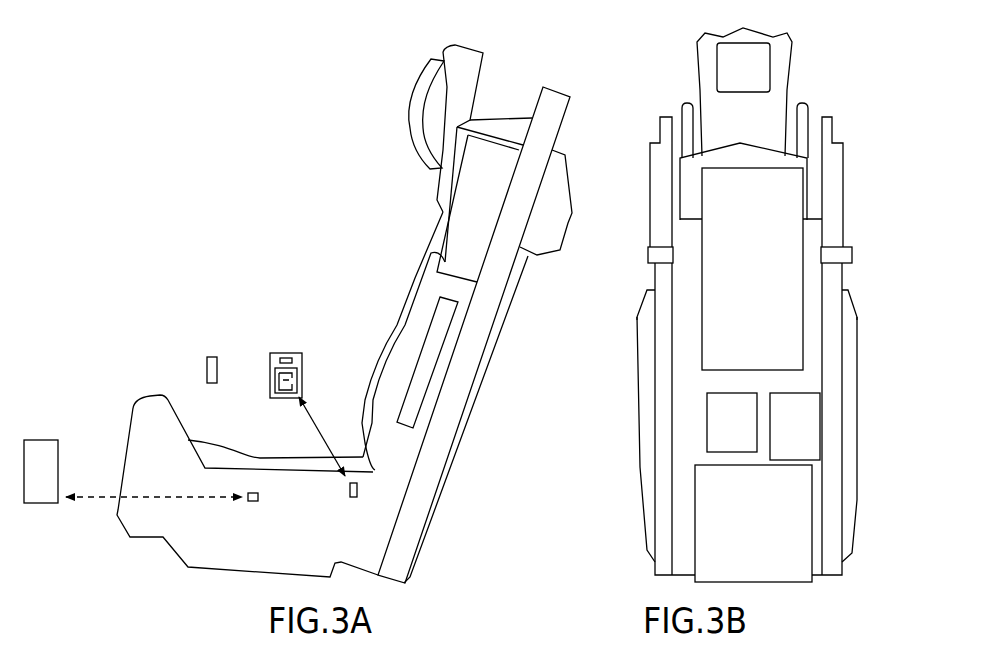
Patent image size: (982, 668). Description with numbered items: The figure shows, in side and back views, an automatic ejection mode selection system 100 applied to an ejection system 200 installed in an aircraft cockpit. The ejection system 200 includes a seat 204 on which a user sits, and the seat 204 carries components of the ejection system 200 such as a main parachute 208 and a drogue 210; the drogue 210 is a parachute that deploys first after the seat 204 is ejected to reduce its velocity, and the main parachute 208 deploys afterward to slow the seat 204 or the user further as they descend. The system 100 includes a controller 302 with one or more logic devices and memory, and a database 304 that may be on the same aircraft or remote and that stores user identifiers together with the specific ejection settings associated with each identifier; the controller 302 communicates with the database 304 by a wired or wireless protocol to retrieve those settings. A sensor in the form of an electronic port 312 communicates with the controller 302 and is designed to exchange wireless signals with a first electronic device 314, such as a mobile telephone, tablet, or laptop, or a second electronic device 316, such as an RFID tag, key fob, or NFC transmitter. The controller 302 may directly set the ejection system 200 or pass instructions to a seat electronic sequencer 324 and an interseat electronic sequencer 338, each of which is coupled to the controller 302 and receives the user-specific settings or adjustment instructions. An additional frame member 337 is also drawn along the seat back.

In FIG. 3A, the system 100 is at (316, 222).
In FIG. 3B, the system 100 is at (858, 138).
In FIG. 3A, the ejection system 200 is at (172, 381).
In FIG. 3B, the ejection system 200 is at (892, 175).
In FIG. 3A, the seat 204 is at (394, 322).
In FIG. 3B, the seat 204 is at (878, 302).
In FIG. 3A, the main parachute 208 is at (478, 277).
In FIG. 3B, the main parachute 208 is at (803, 342).
In FIG. 3A, the drogue 210 is at (561, 238).
In FIG. 3B, the drogue 210 is at (803, 202).
In FIG. 3A, the controller 302 is at (253, 502).
In FIG. 3A, the database 304 is at (42, 504).
In FIG. 3A, the electronic port 312 is at (354, 498).
In FIG. 3A, the first electronic device 314 is at (270, 360).
In FIG. 3A, the second electronic device 316 is at (207, 368).
In FIG. 3B, the seat electronic sequencer 324 is at (800, 427).
In FIG. 3A, the frame member 337 is at (511, 292).
In FIG. 3B, the interseat electronic sequencer 338 is at (718, 413).